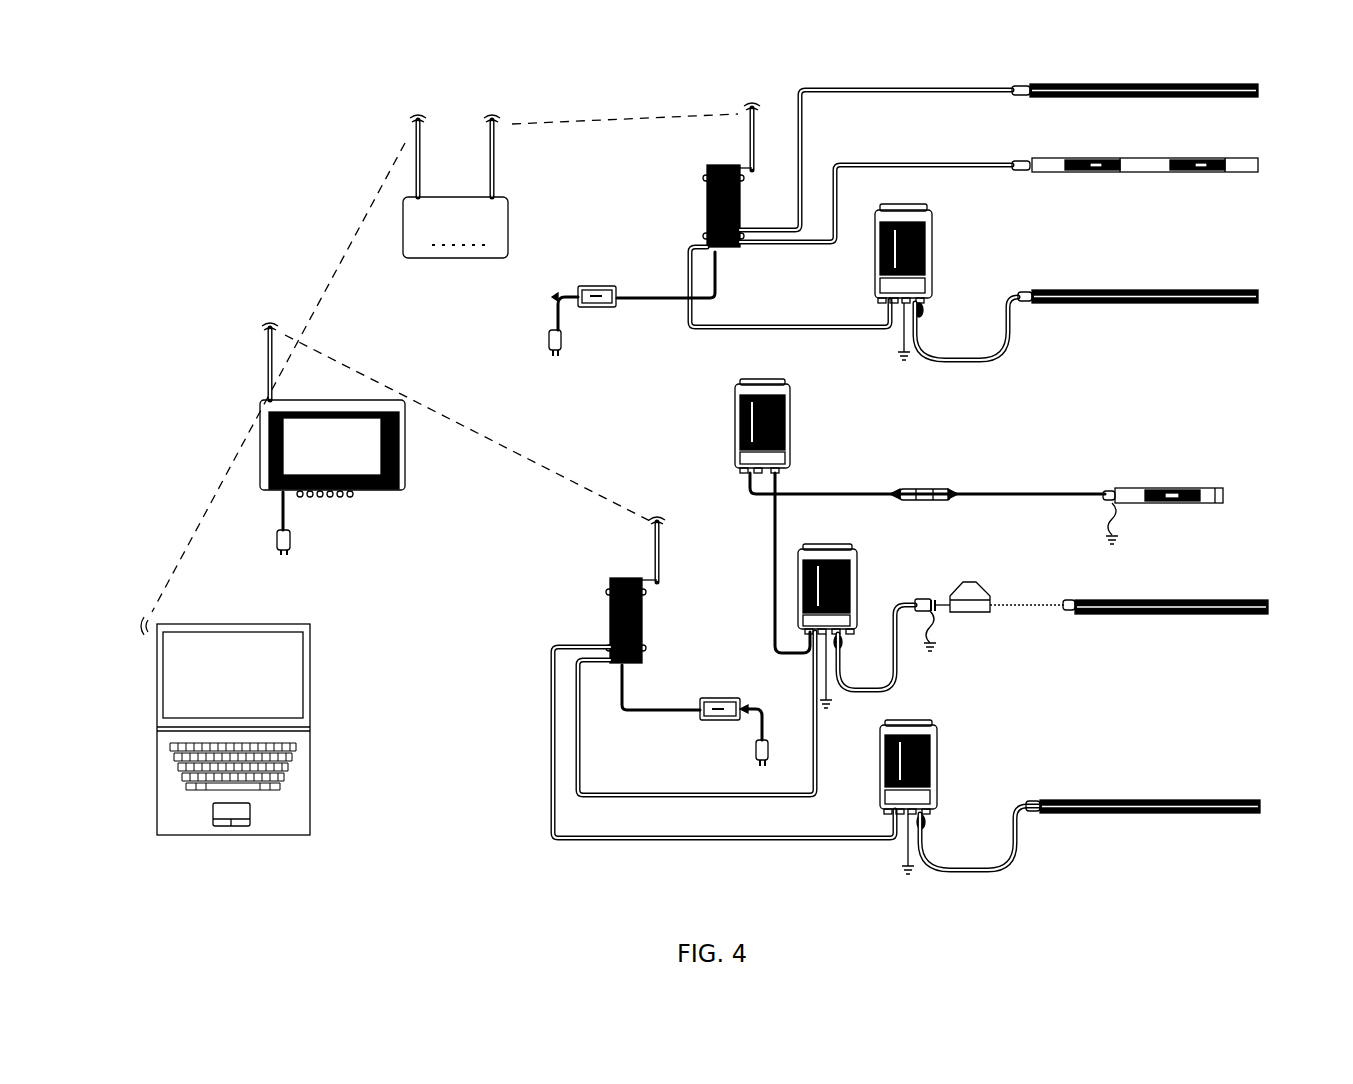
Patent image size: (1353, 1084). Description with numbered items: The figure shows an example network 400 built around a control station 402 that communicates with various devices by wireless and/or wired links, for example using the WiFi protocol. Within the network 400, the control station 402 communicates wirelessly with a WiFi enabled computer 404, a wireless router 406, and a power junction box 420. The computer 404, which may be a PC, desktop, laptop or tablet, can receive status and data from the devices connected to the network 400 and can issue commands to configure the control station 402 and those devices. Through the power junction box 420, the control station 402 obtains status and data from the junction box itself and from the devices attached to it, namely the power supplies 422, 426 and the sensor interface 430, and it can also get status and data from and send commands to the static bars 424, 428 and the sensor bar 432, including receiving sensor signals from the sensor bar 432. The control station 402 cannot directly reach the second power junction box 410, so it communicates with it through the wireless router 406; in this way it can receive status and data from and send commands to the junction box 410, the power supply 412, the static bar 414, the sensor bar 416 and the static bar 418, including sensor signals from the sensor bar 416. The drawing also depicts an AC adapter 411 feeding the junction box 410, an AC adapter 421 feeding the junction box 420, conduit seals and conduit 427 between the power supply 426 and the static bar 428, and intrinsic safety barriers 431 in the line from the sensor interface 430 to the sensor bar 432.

The network 400 is at (434, 493).
The control station 402 is at (389, 439).
The WiFi enabled computer 404 is at (251, 736).
The wireless router 406 is at (479, 195).
The power junction box 410 is at (821, 208).
The AC adapter 411 is at (632, 311).
The power supply 412 is at (946, 274).
The static bar 414 is at (1138, 287).
The sensor bar 416 is at (1135, 159).
The static bar 418 is at (1135, 76).
The power junction box 420 is at (714, 677).
The AC adapter 421 is at (695, 714).
The power supply 422 is at (952, 787).
The static bar 424 is at (1143, 800).
The power supply 426 is at (820, 607).
The conduit seals and conduit 427 is at (995, 605).
The static bar 428 is at (1171, 602).
The sensor interface 430 is at (892, 516).
The intrinsic safety barriers 431 is at (926, 504).
The sensor bar 432 is at (1170, 487).